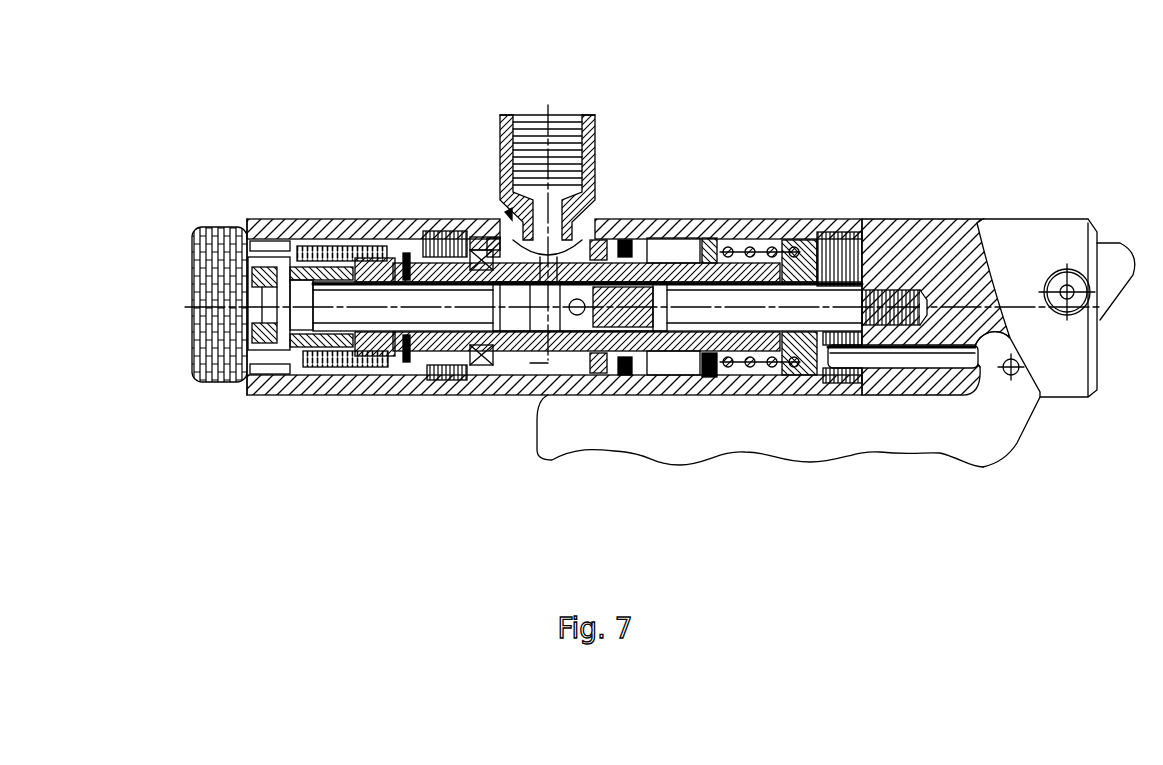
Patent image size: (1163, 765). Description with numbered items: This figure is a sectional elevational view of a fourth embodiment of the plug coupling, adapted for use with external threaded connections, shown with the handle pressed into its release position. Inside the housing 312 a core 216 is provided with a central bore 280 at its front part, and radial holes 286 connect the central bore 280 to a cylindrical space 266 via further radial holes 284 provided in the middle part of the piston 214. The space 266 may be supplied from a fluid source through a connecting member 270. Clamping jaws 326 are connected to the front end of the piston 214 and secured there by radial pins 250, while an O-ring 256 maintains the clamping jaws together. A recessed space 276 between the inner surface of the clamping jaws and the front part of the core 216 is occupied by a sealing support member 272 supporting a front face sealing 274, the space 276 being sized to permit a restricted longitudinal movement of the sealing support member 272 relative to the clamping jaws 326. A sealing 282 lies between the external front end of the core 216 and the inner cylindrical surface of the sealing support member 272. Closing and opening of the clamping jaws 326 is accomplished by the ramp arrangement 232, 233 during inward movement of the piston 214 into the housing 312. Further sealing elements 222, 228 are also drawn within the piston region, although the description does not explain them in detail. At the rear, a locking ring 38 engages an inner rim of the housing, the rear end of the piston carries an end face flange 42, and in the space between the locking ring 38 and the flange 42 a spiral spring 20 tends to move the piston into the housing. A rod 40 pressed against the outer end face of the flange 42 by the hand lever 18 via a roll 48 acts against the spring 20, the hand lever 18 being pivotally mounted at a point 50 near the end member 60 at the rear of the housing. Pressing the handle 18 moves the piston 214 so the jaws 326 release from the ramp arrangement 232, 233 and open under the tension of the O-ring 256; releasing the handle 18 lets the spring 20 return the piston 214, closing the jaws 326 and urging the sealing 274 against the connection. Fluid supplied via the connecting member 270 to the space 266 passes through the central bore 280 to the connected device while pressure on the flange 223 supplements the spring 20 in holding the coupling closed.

The front face sealing 274 is at (197, 240).
The ramp arrangement 232 is at (240, 228).
The sealing support member 272 is at (302, 245).
The sealing 282 is at (323, 245).
The central bore 280 is at (352, 292).
The O-ring 256 is at (443, 240).
The radial holes 284 is at (505, 213).
The connecting member 270 is at (528, 143).
The radial holes 286 is at (580, 300).
The seal 222 is at (626, 238).
The housing 312 is at (677, 230).
The spiral spring 20 is at (752, 255).
The end face flange 42 is at (818, 237).
The core 216 is at (865, 237).
The end member 60 is at (950, 240).
The point 50 is at (1067, 292).
The recessed space 276 is at (250, 353).
The ramp arrangement 233 is at (243, 373).
The clamping jaws 326 is at (322, 363).
The radial pins 250 is at (403, 360).
The seal 228 is at (480, 366).
The cylindrical space 266 is at (537, 363).
The piston 214 is at (577, 347).
The flange 223 is at (572, 325).
The locking ring 38 is at (709, 377).
The hand lever 18 is at (813, 442).
The rod 40 is at (947, 362).
The roll 48 is at (987, 367).